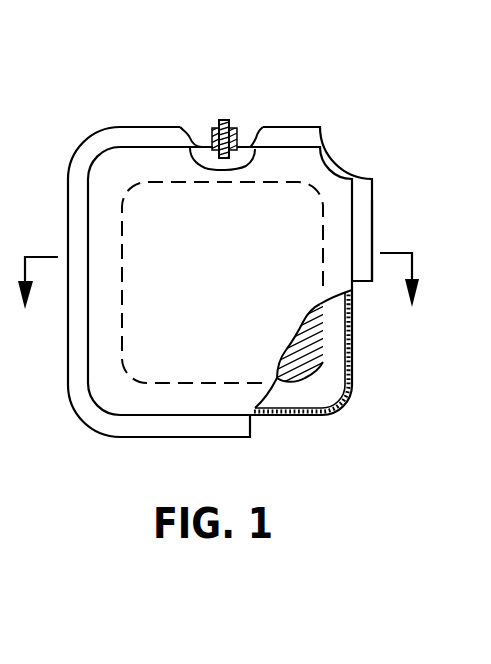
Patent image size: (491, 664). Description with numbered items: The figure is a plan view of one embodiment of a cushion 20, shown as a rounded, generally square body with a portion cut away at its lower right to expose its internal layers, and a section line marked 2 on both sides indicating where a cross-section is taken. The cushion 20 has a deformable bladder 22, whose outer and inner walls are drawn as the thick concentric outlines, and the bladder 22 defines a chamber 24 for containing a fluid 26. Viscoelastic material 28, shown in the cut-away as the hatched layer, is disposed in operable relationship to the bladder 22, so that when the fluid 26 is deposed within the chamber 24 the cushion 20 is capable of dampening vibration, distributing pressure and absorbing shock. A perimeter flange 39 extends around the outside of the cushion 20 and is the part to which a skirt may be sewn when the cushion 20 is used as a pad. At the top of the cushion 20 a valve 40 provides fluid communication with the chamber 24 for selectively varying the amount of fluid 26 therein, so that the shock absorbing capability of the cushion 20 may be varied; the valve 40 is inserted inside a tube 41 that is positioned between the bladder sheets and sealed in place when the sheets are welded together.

The section line 2- 2 is at (219, 302).
The cushion 20 is at (229, 250).
The deformable bladder 22 is at (68, 201).
The chamber 24 is at (303, 395).
The fluid 26 is at (353, 355).
The viscoelastic material 28 is at (352, 387).
The perimeter flange 39 is at (372, 220).
The valve 40 is at (221, 119).
The tube 41 is at (234, 124).